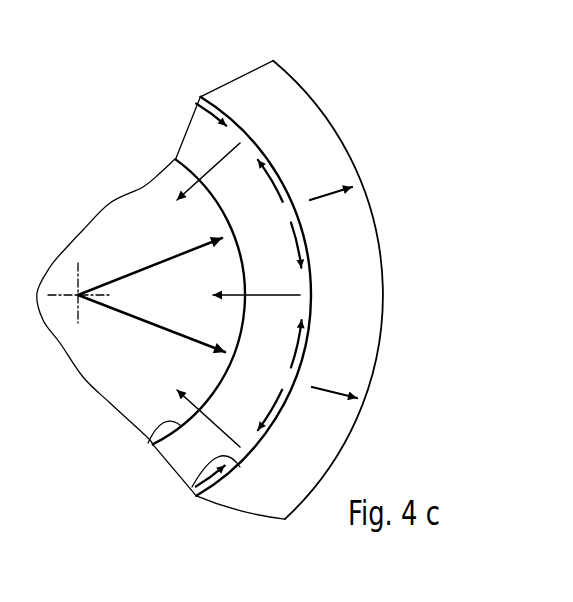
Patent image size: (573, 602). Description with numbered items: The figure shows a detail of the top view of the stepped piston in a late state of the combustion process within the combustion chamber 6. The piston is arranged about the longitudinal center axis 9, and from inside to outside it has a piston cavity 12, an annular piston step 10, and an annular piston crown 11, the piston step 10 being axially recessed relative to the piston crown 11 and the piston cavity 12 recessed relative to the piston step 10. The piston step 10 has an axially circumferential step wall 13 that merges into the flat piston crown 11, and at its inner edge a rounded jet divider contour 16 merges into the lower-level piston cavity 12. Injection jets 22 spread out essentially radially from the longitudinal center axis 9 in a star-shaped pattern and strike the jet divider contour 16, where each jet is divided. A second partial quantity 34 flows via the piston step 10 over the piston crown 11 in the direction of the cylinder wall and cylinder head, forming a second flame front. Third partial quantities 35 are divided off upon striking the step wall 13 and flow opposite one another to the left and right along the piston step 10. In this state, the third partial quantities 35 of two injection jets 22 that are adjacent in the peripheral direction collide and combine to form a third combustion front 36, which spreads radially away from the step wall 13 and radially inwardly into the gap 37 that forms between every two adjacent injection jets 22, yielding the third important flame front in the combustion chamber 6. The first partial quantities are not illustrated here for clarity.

The combustion chamber 6 is at (150, 248).
The longitudinal center axis 9 is at (60, 277).
The piston step 10 is at (190, 147).
The piston crown 11 is at (253, 97).
The piston cavity 12 is at (147, 207).
The step wall 13 is at (192, 480).
The jet divider contour 16 is at (147, 437).
The injection jets 22 is at (122, 277).
The second partial quantity 34 is at (325, 197).
The third partial quantities 35 is at (207, 97).
The third combustion front 36 is at (223, 163).
The gap 37 is at (193, 303).